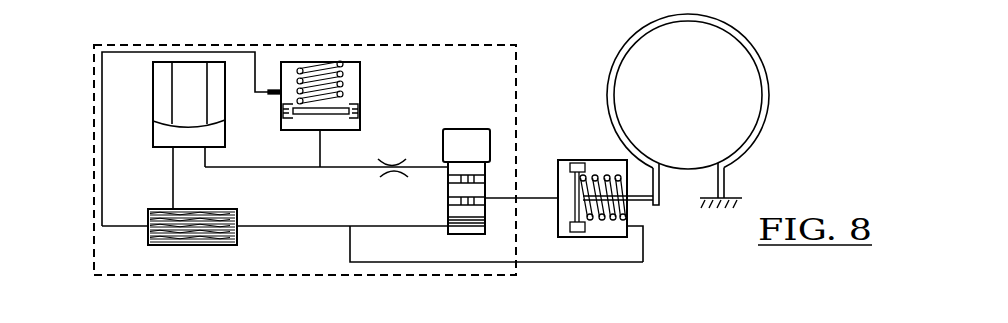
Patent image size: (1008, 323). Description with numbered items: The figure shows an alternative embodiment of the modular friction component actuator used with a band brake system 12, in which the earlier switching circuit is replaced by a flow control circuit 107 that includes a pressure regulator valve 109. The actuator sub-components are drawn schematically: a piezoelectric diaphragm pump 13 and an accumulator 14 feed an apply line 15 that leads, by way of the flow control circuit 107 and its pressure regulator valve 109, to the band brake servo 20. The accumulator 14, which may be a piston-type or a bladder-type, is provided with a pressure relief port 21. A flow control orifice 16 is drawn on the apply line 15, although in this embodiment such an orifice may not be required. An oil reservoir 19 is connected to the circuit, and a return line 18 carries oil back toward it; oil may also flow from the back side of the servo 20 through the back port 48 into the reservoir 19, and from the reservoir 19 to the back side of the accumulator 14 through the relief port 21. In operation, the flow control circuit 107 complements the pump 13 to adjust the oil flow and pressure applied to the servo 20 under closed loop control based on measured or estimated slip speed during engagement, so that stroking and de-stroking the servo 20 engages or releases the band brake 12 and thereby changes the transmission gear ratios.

The band brake system 12 is at (620, 52).
The piezoelectric diaphragm pump 13 is at (153, 121).
The accumulator 14 is at (343, 63).
The apply line 15 is at (343, 168).
The flow control orifice 16 is at (396, 160).
The return line 18 is at (587, 263).
The oil reservoir 19 is at (213, 245).
The band brake servo 20 is at (587, 162).
The pressure relief port 21 is at (272, 92).
The back port 48 is at (645, 217).
The flow control circuit 107 is at (481, 130).
The pressure regulator valve 109 is at (463, 138).